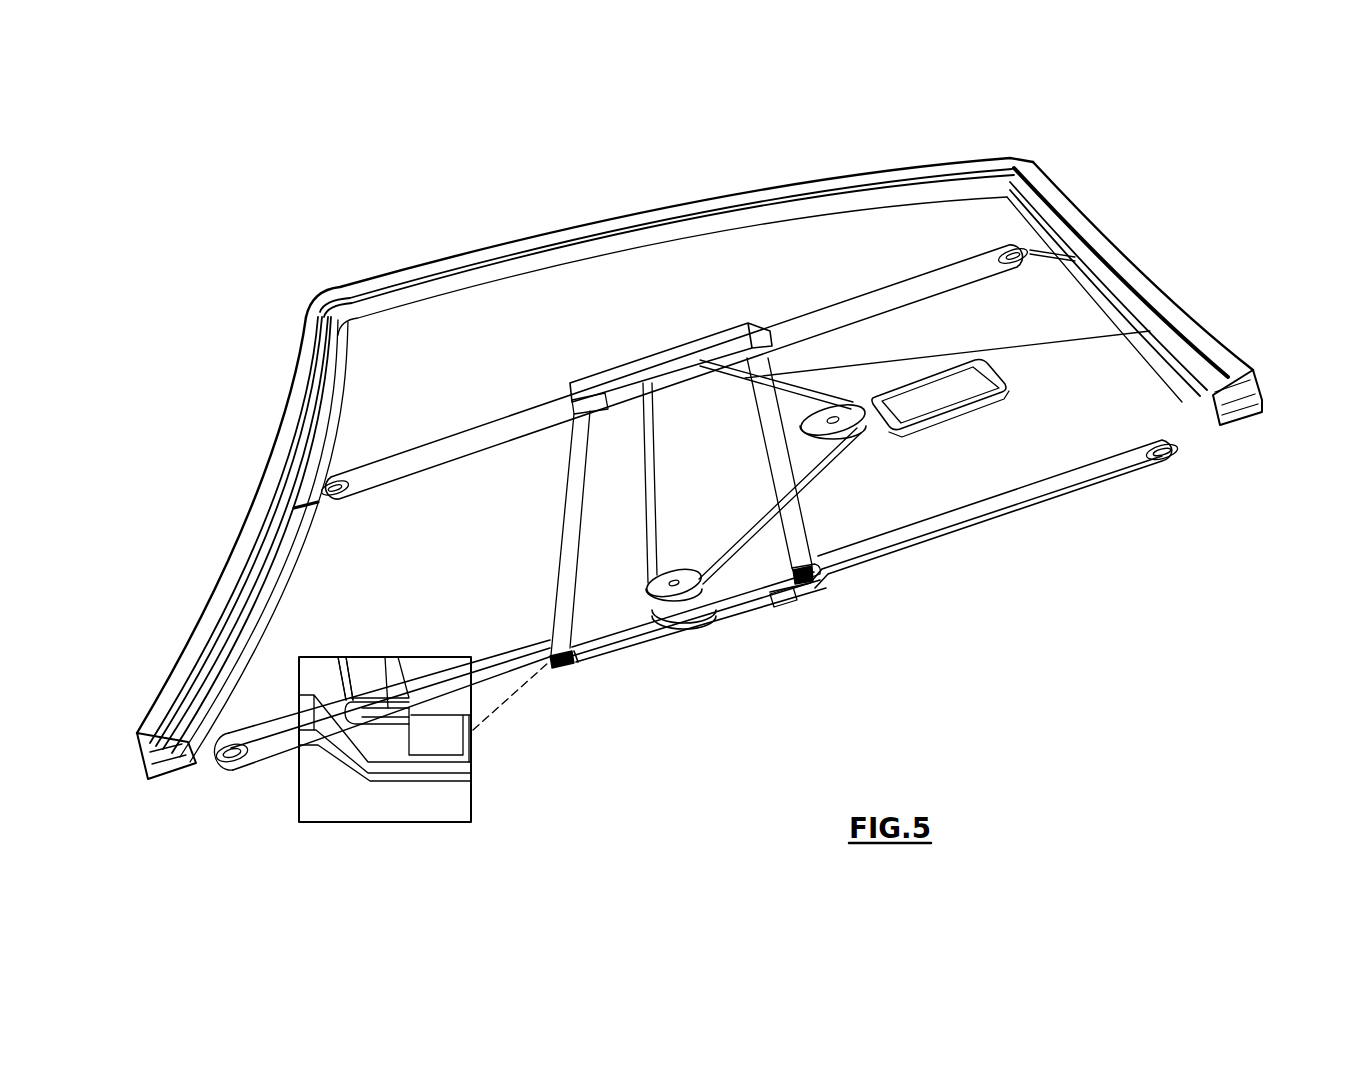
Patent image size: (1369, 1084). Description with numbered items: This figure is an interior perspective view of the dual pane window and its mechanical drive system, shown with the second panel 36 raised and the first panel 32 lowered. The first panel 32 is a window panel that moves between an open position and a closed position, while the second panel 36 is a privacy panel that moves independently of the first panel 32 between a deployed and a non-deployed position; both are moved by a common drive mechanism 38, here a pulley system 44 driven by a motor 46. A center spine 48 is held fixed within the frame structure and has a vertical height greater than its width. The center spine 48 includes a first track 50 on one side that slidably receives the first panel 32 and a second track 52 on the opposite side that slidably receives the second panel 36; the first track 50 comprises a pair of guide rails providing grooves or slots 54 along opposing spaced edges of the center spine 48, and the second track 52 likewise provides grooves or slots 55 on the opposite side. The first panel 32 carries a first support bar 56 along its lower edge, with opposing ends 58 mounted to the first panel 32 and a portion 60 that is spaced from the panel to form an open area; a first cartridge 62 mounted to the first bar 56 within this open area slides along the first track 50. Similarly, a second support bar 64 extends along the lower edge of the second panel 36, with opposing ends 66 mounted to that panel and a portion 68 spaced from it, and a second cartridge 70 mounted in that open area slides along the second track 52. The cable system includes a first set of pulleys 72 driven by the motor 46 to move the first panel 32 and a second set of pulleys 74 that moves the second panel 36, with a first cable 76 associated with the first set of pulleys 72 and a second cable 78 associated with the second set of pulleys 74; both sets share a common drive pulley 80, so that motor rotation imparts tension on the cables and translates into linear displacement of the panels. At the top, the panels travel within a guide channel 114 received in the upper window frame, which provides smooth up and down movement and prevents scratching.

The first panel 32 is at (318, 537).
The second panel 36 is at (367, 340).
The drive mechanism 38 is at (1024, 360).
The pulley system 44 is at (872, 465).
The motor 46 is at (957, 380).
The center spine 48 is at (737, 580).
The first track 50 is at (814, 577).
The second track 52 is at (808, 530).
The grooves or slots 54 is at (393, 720).
The grooves or slots 55 is at (385, 710).
The first support/mounting bar 56 is at (905, 540).
The opposing ends 58 is at (230, 763).
The portion 60 is at (760, 600).
The first cartridge 62 is at (783, 592).
The second support/mounting bar 64 is at (877, 302).
The opposing ends 66 is at (333, 500).
The portion 68 is at (722, 342).
The second cartridge 70 is at (580, 413).
The first set of pulleys 72 is at (697, 655).
The second set of pulleys 74 is at (683, 555).
The first cable 76 is at (833, 470).
The second cable 78 is at (803, 390).
The common drive pulley 80 is at (853, 413).
The guide channel 114 is at (138, 743).